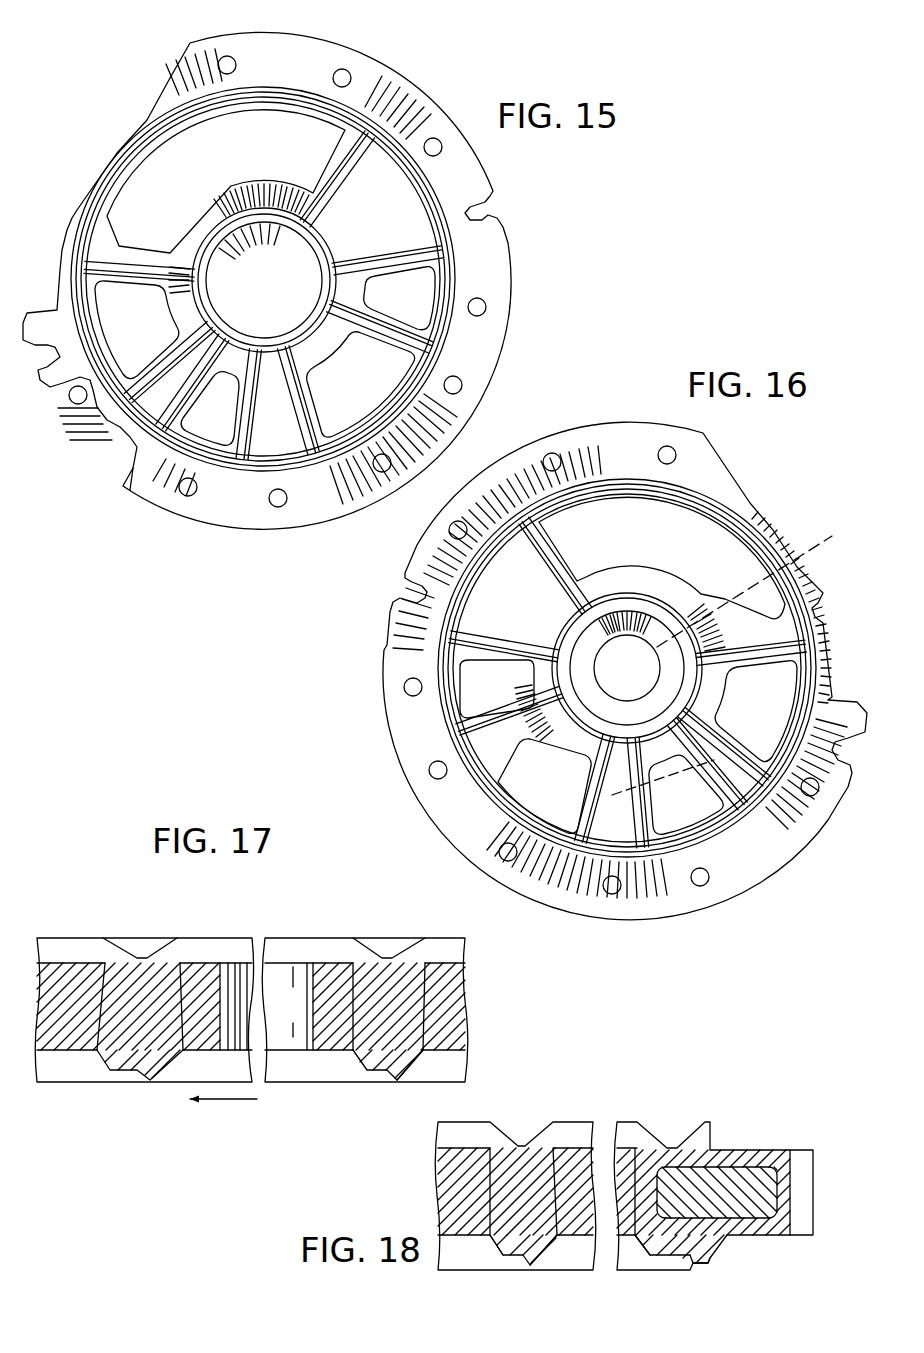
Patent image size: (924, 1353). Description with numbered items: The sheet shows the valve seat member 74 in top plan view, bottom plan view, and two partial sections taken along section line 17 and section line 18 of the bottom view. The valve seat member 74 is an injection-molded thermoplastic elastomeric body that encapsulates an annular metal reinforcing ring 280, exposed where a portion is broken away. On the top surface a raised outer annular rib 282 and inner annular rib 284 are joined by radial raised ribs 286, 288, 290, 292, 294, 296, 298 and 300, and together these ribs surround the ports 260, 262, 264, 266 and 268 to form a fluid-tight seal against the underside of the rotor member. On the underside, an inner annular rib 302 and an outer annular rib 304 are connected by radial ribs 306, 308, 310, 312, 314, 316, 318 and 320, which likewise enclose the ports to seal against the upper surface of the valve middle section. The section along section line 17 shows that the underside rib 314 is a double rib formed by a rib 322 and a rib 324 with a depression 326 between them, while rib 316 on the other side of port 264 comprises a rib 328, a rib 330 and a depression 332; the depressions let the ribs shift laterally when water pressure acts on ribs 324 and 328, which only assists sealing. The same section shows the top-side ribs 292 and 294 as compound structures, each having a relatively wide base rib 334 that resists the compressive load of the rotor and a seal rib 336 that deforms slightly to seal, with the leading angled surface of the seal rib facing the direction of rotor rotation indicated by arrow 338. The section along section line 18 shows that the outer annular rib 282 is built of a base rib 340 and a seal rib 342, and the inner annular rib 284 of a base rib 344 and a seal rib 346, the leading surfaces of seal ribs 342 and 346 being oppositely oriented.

In FIG. 16, the section line 17— 17 is at (716, 764).
In FIG. 16, the section line 18— 18 is at (848, 571).
In FIG. 15, the valve seat member 74 is at (438, 104).
In FIG. 16, the valve seat member 74 is at (628, 424).
In FIG. 15, the port 260 is at (164, 145).
In FIG. 16, the port 260 is at (675, 505).
In FIG. 15, the port 262 is at (98, 310).
In FIG. 16, the port 262 is at (790, 710).
In FIG. 15, the port 264 is at (198, 391).
In FIG. 16, the port 264 is at (684, 824).
In FIG. 17, the port 264 is at (300, 1019).
In FIG. 15, the port 266 is at (309, 404).
In FIG. 16, the port 266 is at (583, 787).
In FIG. 15, the port 268 is at (370, 317).
In FIG. 16, the port 268 is at (460, 704).
In FIG. 15, the reinforcing ring 280 is at (95, 436).
In FIG. 18, the reinforcing ring 280 is at (723, 1162).
In FIG. 15, the outer annular rib 282 is at (275, 84).
In FIG. 18, the outer annular rib 282 is at (677, 1272).
In FIG. 15, the inner annular rib 284 is at (250, 221).
In FIG. 18, the inner annular rib 284 is at (500, 1272).
In FIG. 15, the radial rib 286 is at (338, 192).
In FIG. 15, the radial rib 288 is at (114, 251).
In FIG. 15, the radial rib 290 is at (128, 382).
In FIG. 15, the radial rib 292 is at (229, 345).
In FIG. 17, the radial rib 292 is at (332, 1088).
In FIG. 15, the radial rib 294 is at (247, 367).
In FIG. 17, the radial rib 294 is at (133, 1089).
In FIG. 15, the radial rib 296 is at (311, 425).
In FIG. 15, the radial rib 298 is at (403, 350).
In FIG. 15, the radial rib 300 is at (403, 250).
In FIG. 16, the inner annular rib 302 is at (642, 587).
In FIG. 18, the inner annular rib 302 is at (533, 1120).
In FIG. 16, the outer annular rib 304 is at (712, 497).
In FIG. 18, the outer annular rib 304 is at (682, 1105).
In FIG. 16, the radial rib 306 is at (554, 547).
In FIG. 16, the radial rib 308 is at (491, 631).
In FIG. 16, the radial rib 310 is at (481, 740).
In FIG. 16, the radial rib 312 is at (597, 746).
In FIG. 16, the radial rib 314 is at (626, 749).
In FIG. 17, the radial rib 314 is at (189, 925).
In FIG. 16, the radial rib 316 is at (670, 749).
In FIG. 17, the radial rib 316 is at (419, 930).
In FIG. 16, the radial rib 318 is at (722, 737).
In FIG. 16, the radial rib 320 is at (724, 646).
In FIG. 17, the rib 322 is at (99, 938).
In FIG. 17, the rib 324 is at (182, 940).
In FIG. 17, the depression 326 is at (143, 950).
In FIG. 17, the rib 328 is at (352, 941).
In FIG. 17, the rib 330 is at (436, 941).
In FIG. 17, the depression 332 is at (387, 950).
In FIG. 17, the base rib 334 is at (360, 1070).
In FIG. 17, the seal rib 336 is at (413, 1078).
In FIG. 17, the arrow 338 is at (223, 1101).
In FIG. 18, the base rib 340 is at (680, 1262).
In FIG. 18, the seal rib 342 is at (650, 1263).
In FIG. 18, the base rib 344 is at (490, 1262).
In FIG. 18, the seal rib 346 is at (551, 1261).